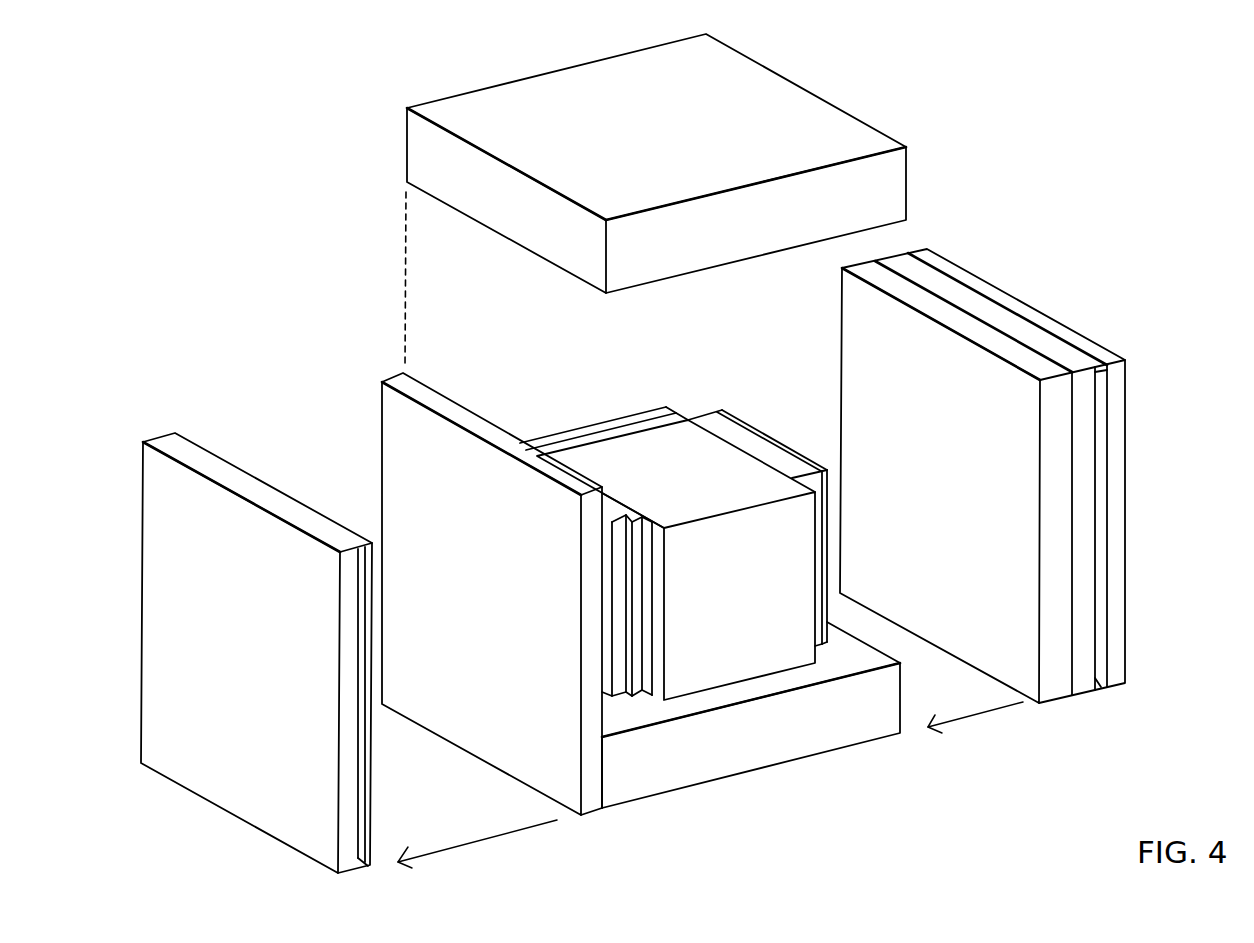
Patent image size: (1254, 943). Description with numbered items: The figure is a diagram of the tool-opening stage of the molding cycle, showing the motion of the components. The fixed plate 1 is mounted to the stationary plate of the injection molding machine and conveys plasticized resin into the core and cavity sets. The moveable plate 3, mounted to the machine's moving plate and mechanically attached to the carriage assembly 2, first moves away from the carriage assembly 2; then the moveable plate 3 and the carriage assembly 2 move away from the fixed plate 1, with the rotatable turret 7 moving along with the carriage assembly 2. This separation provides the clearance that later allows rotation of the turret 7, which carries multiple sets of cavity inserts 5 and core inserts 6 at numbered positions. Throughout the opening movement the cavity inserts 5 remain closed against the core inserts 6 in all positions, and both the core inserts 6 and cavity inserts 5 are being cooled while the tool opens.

The fixed plate 1 is at (1078, 700).
The carriage assembly 2 is at (688, 792).
The moveable plate 3 is at (158, 437).
The cavity inserts 5 is at (755, 428).
The core inserts 6 is at (697, 413).
The turret 7 is at (638, 453).